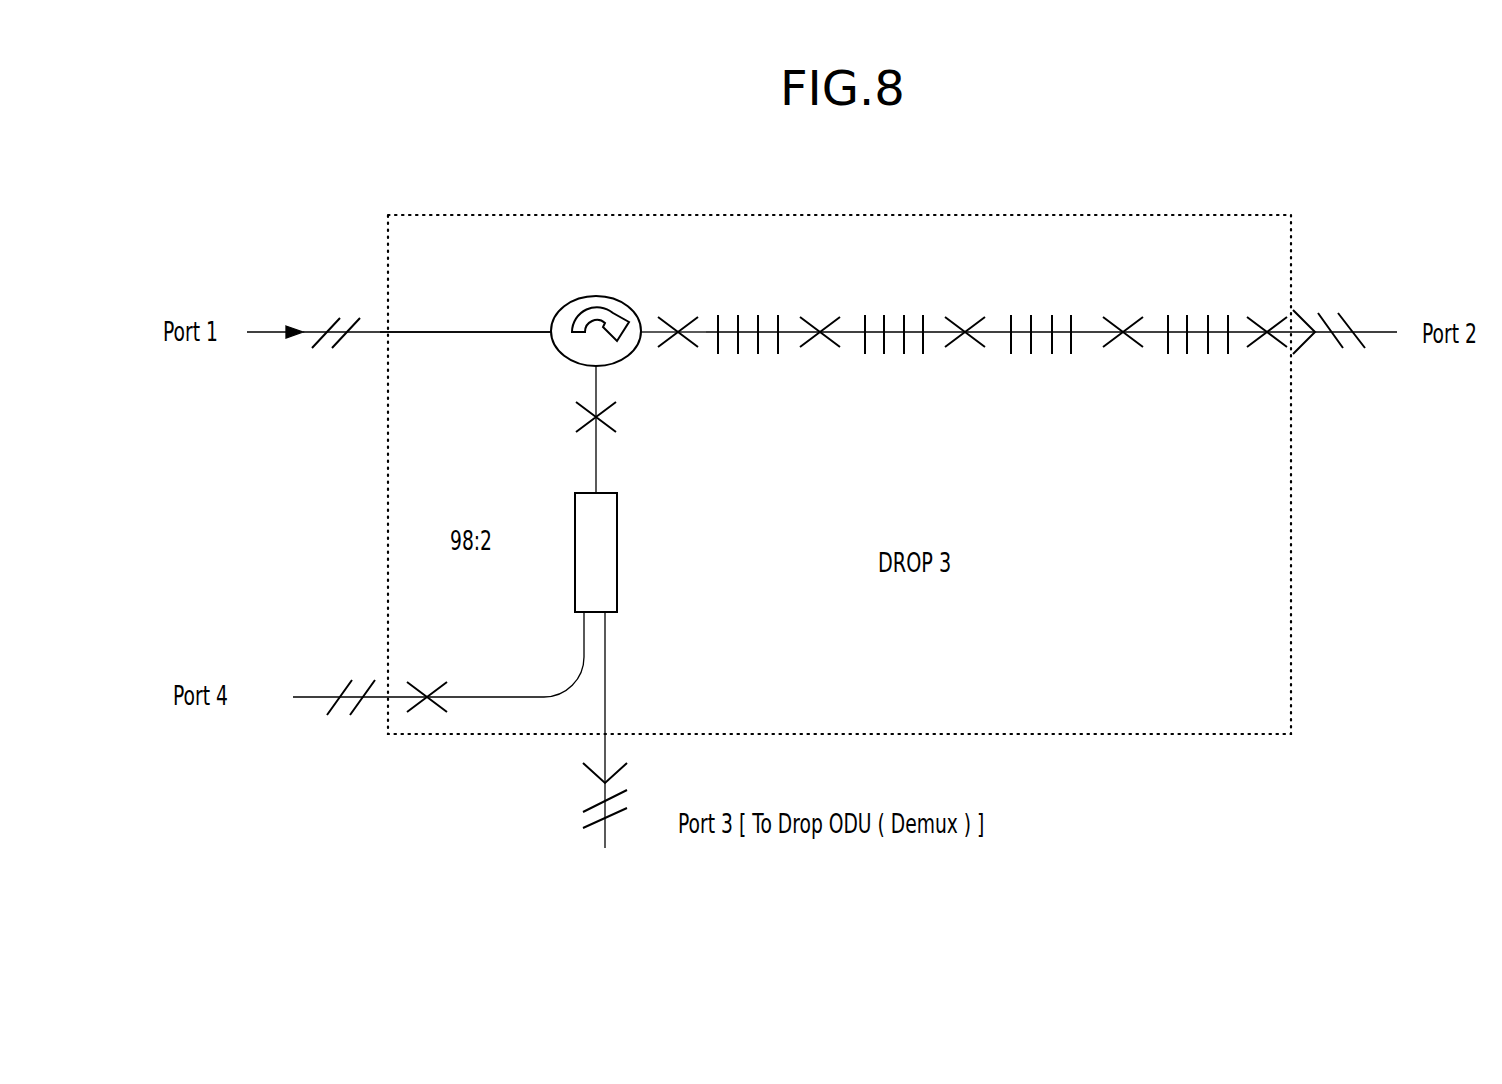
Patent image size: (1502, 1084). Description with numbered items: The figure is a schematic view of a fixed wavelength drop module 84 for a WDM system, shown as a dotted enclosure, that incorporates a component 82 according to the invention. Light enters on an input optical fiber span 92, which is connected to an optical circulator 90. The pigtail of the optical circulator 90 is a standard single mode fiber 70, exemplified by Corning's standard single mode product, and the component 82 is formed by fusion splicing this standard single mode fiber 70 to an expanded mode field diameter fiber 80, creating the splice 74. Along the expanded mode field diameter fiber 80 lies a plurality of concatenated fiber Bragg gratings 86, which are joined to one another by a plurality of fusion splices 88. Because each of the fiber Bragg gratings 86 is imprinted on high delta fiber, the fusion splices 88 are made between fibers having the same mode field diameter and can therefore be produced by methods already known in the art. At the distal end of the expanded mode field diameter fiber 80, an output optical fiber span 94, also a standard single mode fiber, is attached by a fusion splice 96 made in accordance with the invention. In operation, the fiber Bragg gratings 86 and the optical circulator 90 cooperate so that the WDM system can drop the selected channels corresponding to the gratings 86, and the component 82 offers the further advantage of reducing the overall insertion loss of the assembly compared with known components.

The standard single mode fiber 70 is at (655, 335).
The splice 74 is at (680, 322).
The expanded mode field diameter fiber 80 is at (705, 335).
The component 82 is at (895, 273).
The drop module 84 is at (1142, 727).
The fiber Bragg gratings 86 is at (759, 316).
The fusion splices 88 is at (823, 350).
The optical circulator 90 is at (597, 295).
The input optical fiber span 92 is at (472, 332).
The output optical fiber span 94 is at (1375, 332).
The fusion splice 96 is at (1262, 346).